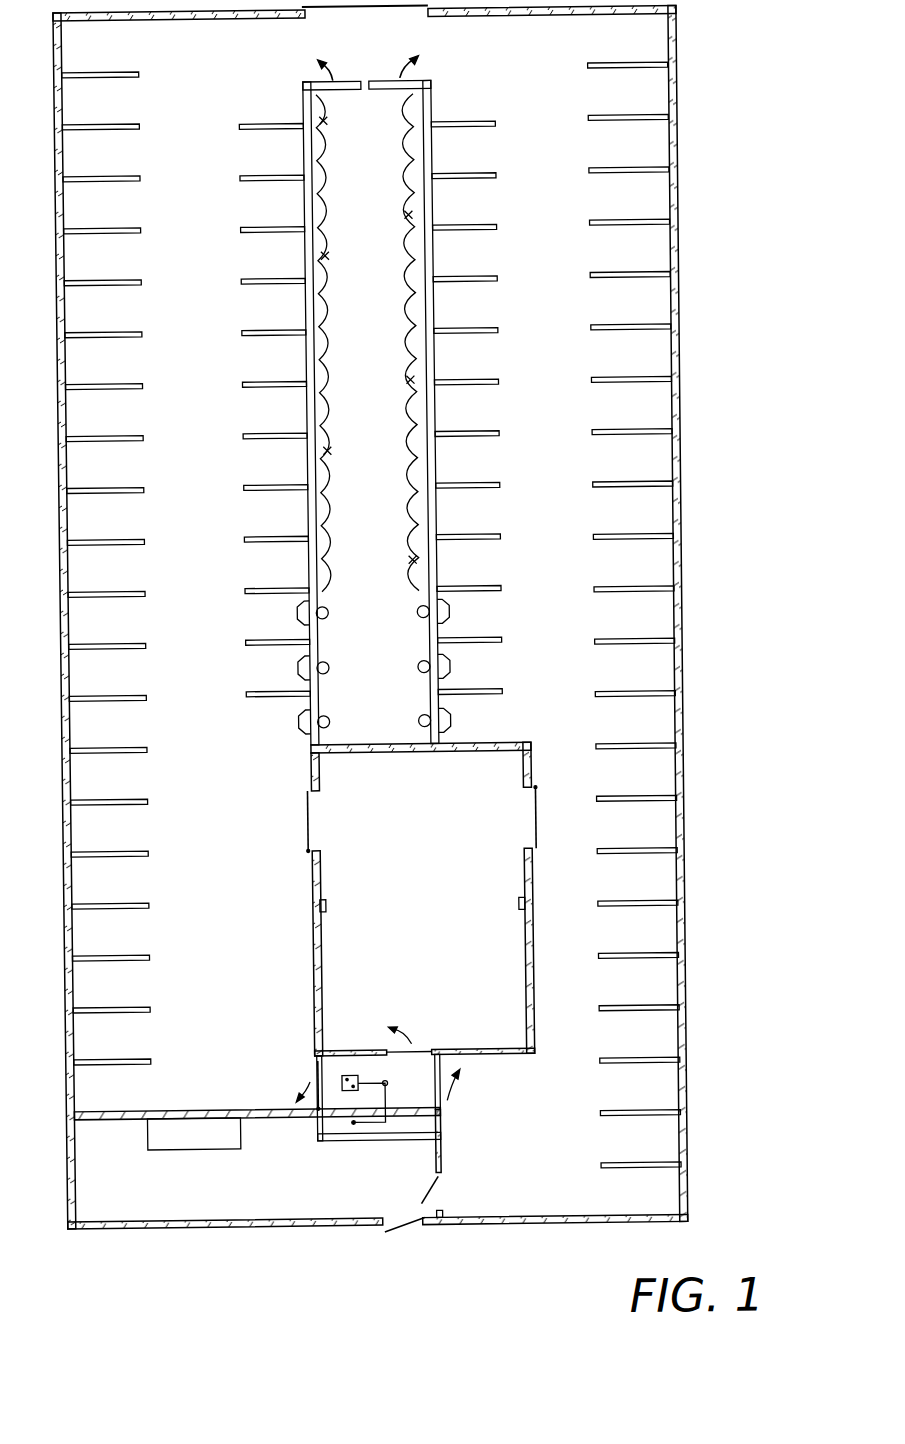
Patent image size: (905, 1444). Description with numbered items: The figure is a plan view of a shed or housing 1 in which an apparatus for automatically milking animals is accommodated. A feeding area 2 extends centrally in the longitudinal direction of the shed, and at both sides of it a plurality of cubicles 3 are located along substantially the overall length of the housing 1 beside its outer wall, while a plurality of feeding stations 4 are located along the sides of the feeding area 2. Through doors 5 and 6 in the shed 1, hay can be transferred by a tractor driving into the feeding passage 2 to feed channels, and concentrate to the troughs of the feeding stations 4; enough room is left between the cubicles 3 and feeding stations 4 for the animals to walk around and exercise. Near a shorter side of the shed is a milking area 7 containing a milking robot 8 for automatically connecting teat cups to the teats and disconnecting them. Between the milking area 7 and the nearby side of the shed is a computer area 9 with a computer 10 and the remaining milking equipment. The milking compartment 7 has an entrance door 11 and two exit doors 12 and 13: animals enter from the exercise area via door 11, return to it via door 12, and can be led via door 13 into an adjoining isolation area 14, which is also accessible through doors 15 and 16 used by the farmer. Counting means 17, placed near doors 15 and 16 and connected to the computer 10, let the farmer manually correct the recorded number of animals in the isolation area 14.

The shed or housing 1 is at (687, 115).
The feeding area 2 is at (381, 749).
The cubicles 3 is at (120, 260).
The feeding stations 4 is at (257, 464).
The door 5 is at (388, 16).
The door 6 is at (387, 87).
The milking area 7 is at (396, 1097).
The milking robot 8 is at (335, 1079).
The computer area 9 is at (295, 1205).
The computer 10 is at (193, 1142).
The entrance door 11 is at (305, 1071).
The exit door 12 is at (424, 1102).
The exit door 13 is at (412, 1050).
The isolation area 14 is at (338, 983).
The door 15 is at (297, 842).
The door 16 is at (528, 818).
The counting means 17 is at (315, 913).